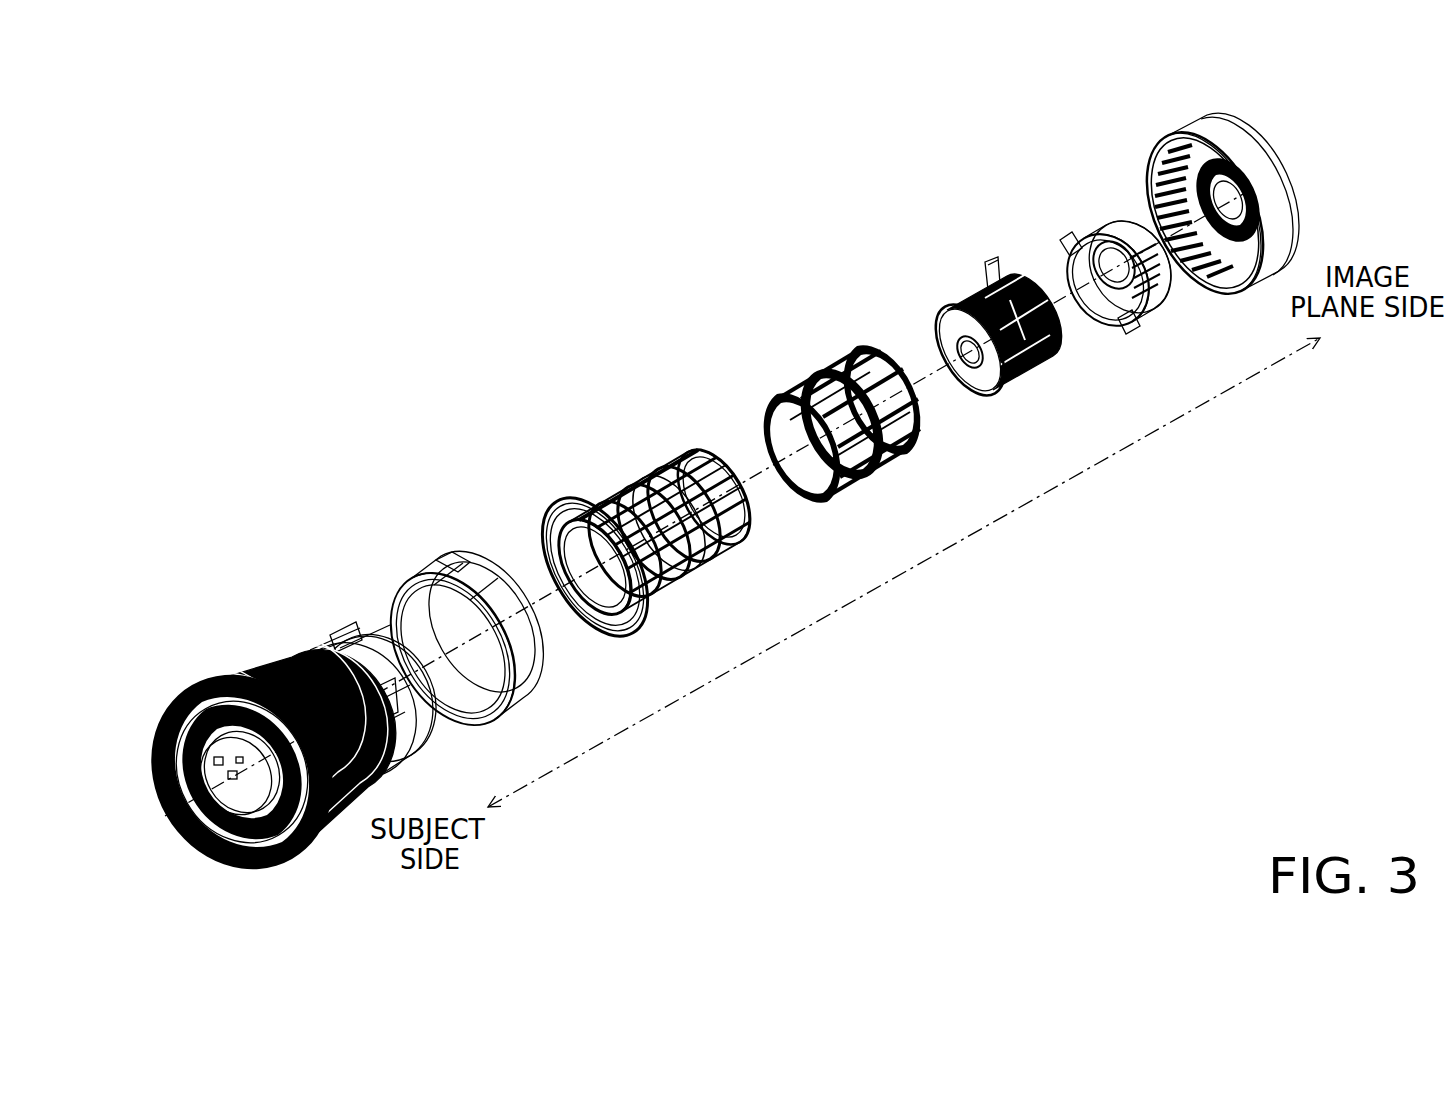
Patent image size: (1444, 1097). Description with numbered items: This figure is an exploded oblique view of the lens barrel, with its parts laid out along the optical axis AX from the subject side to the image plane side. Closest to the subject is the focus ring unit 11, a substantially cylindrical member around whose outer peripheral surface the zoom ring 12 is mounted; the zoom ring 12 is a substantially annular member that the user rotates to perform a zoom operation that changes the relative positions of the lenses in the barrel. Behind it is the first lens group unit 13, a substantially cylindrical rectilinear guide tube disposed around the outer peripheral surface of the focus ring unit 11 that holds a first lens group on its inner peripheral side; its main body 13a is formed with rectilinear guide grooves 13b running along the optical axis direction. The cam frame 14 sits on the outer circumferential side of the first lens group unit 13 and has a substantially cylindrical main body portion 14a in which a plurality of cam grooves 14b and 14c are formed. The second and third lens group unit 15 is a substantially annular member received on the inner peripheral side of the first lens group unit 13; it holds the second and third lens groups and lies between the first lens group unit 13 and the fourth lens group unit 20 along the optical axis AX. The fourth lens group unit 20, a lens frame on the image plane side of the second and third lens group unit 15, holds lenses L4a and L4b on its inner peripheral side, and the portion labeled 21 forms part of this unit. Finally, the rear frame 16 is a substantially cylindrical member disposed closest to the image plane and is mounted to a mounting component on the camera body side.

The focus ring unit 11 is at (220, 650).
The zoom ring 12 is at (425, 548).
The first lens group unit 13 is at (643, 510).
The main body 13a is at (718, 470).
The rectilinear guide grooves 13b is at (668, 503).
The cam frame 14 is at (856, 380).
The main body portion 14a is at (890, 383).
The cam groove 14b is at (867, 360).
The cam groove 14c is at (916, 440).
The second and third lens group unit 15 is at (962, 288).
The rear frame 16 is at (1182, 132).
The fourth lens group unit 20 is at (1092, 256).
The holder body 21 is at (1146, 297).
The lens L4a is at (1100, 235).
The lens L4b is at (1114, 264).
The optical axis AX is at (165, 816).